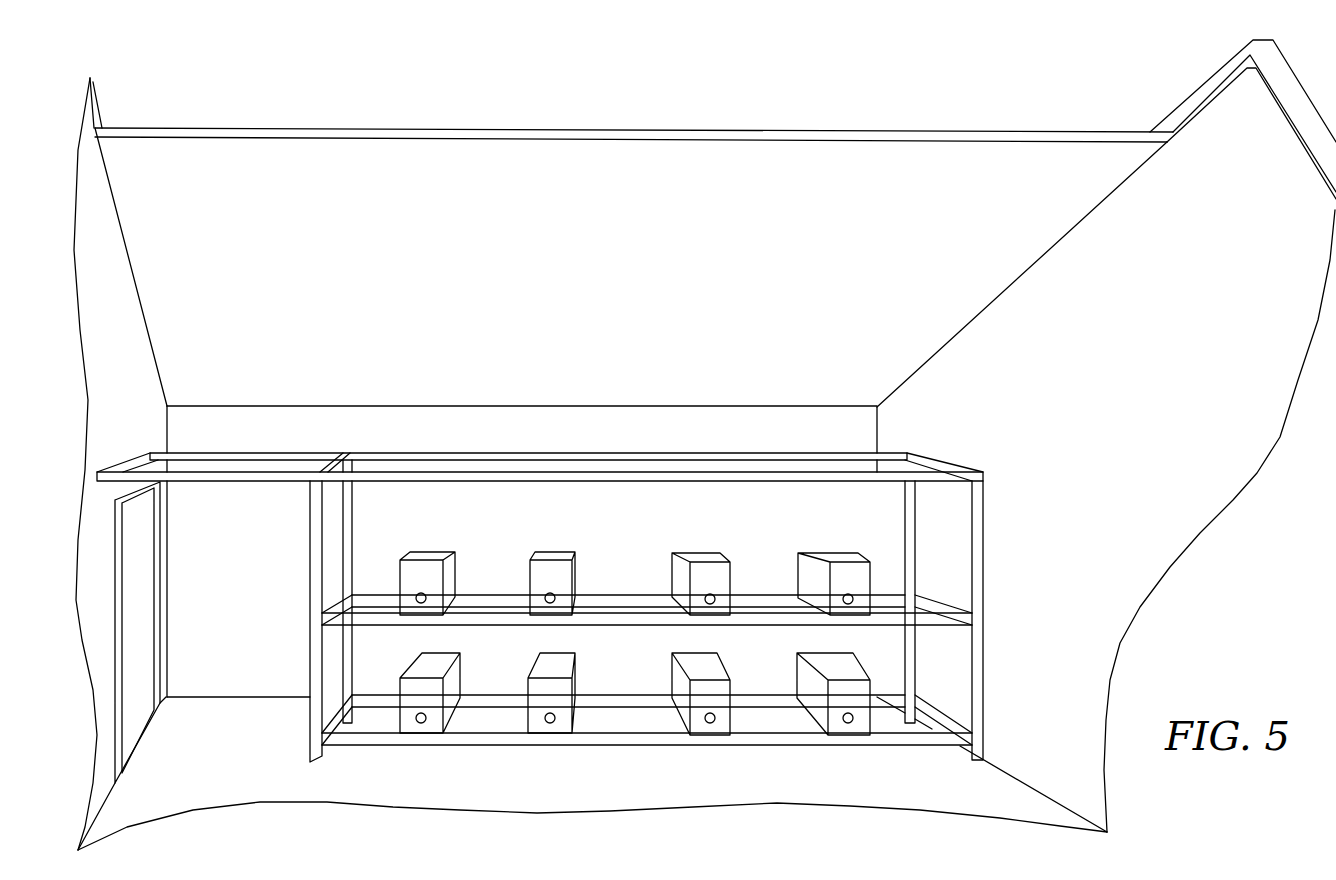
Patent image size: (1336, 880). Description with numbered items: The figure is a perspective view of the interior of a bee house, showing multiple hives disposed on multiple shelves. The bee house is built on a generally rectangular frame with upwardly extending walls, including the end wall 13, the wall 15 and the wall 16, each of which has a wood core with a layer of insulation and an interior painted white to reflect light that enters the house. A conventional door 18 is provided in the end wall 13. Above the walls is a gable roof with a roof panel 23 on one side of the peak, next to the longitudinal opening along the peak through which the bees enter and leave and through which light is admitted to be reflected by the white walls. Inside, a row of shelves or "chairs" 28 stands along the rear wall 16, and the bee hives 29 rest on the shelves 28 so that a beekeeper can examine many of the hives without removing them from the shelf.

The wall 13 is at (139, 358).
The roof panel 23 is at (600, 213).
The wall 15 is at (1162, 354).
The wall 16 is at (255, 580).
The door 18 is at (150, 594).
The shelves 28 is at (1005, 592).
The bee hives 29 is at (548, 668).